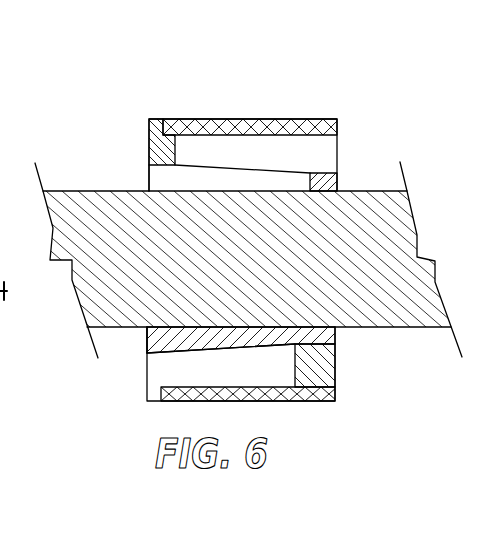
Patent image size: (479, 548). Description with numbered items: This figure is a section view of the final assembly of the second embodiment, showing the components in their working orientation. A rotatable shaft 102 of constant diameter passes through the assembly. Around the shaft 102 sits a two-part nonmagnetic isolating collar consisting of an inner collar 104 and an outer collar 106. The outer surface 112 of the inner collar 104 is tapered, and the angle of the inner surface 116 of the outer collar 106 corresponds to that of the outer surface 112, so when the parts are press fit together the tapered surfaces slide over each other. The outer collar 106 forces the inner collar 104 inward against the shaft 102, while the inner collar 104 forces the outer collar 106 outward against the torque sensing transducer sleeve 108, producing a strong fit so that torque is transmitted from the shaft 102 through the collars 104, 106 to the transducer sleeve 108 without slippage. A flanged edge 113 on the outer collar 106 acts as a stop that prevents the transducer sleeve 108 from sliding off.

The rotatable shaft 102 is at (64, 190).
The nonmagnetic isolating inner collar 104 is at (148, 343).
The nonmagnetic isolating outer collar 106 is at (150, 147).
The torque sensing transducer sleeve 108 is at (337, 130).
The outer surface of the inner collar 112 is at (235, 168).
The flanged edge 113 is at (152, 402).
The inner surface of the outer collar 116 is at (148, 189).